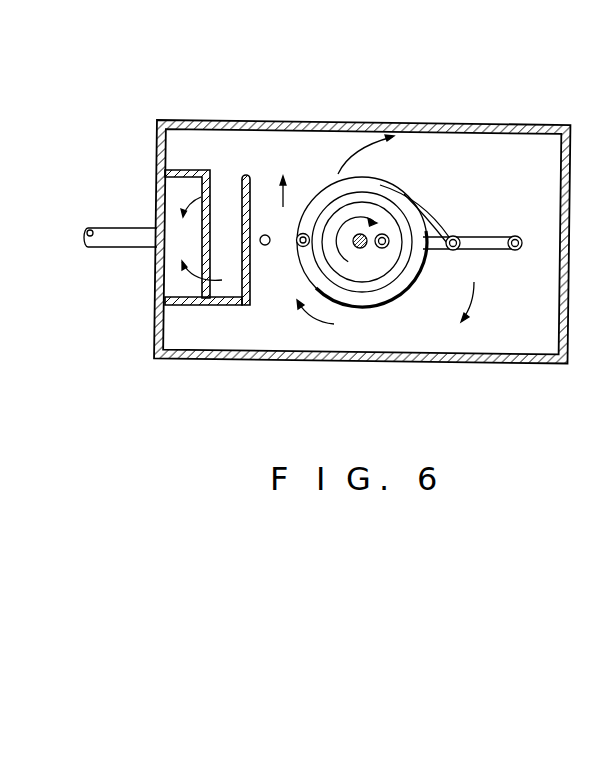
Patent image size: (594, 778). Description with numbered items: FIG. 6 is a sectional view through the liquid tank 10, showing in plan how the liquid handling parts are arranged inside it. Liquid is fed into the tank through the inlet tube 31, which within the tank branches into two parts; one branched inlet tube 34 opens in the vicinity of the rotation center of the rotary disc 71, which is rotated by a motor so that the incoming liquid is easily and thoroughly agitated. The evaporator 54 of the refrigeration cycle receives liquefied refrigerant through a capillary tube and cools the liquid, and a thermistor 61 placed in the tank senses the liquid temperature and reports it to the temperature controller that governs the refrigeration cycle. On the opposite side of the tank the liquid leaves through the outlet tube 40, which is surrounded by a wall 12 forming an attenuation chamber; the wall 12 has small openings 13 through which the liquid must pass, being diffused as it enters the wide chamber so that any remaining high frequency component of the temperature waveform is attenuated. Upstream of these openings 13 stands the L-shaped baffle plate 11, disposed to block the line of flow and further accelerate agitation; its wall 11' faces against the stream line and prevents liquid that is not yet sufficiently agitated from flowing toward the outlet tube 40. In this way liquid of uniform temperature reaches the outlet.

The liquid tank 10 is at (488, 125).
The baffle plate 11 is at (279, 224).
The wall 11' is at (203, 324).
The wall 12 is at (191, 170).
The small openings 13 is at (204, 197).
The inlet tube 31 is at (511, 237).
The branched inlet tube 34 is at (490, 252).
The outlet tube 40 is at (117, 248).
The evaporator 54 is at (406, 291).
The thermistor 61 is at (265, 247).
The rotary disc 71 is at (387, 228).